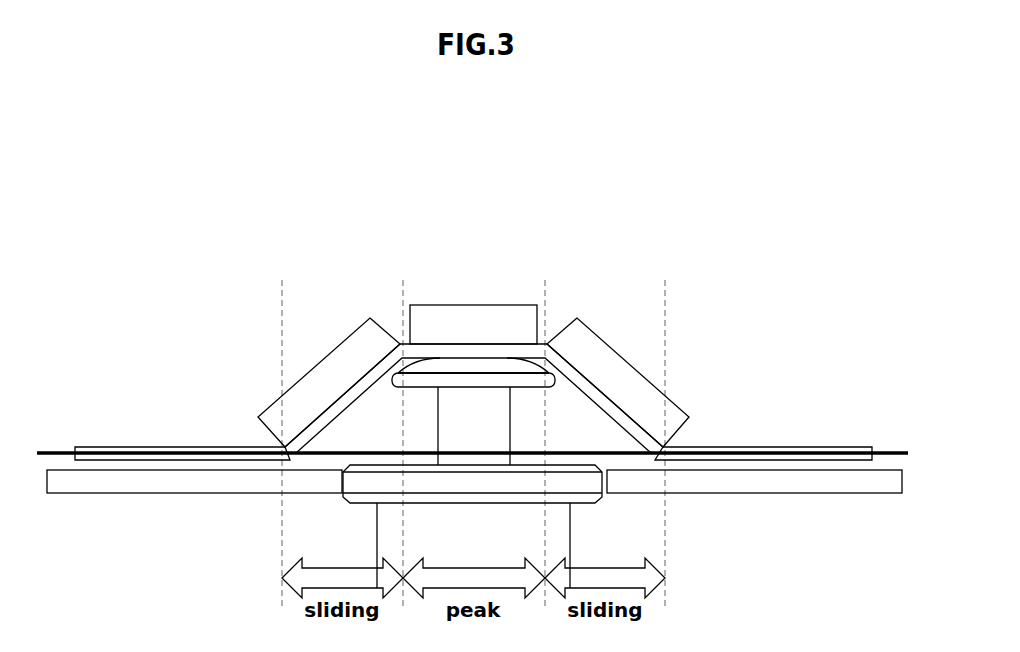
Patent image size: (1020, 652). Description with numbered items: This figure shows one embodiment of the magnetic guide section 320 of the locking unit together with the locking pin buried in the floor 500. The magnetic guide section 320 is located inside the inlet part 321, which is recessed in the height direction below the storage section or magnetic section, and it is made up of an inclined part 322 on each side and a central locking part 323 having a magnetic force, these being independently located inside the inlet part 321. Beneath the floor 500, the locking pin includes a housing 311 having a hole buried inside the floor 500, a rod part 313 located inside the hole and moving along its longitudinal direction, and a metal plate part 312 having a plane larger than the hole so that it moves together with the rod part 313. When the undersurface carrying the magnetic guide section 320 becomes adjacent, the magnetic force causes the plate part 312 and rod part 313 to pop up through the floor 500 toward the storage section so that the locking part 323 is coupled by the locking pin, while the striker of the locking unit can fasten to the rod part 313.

The floor 500 is at (850, 447).
The housing 311 is at (588, 503).
The plate part 312 is at (420, 378).
The rod part 313 is at (438, 420).
The magnetic guide section 320 is at (473, 312).
The inlet part 321 is at (358, 436).
The inclined part 322 is at (350, 337).
The locking part 323 is at (473, 285).